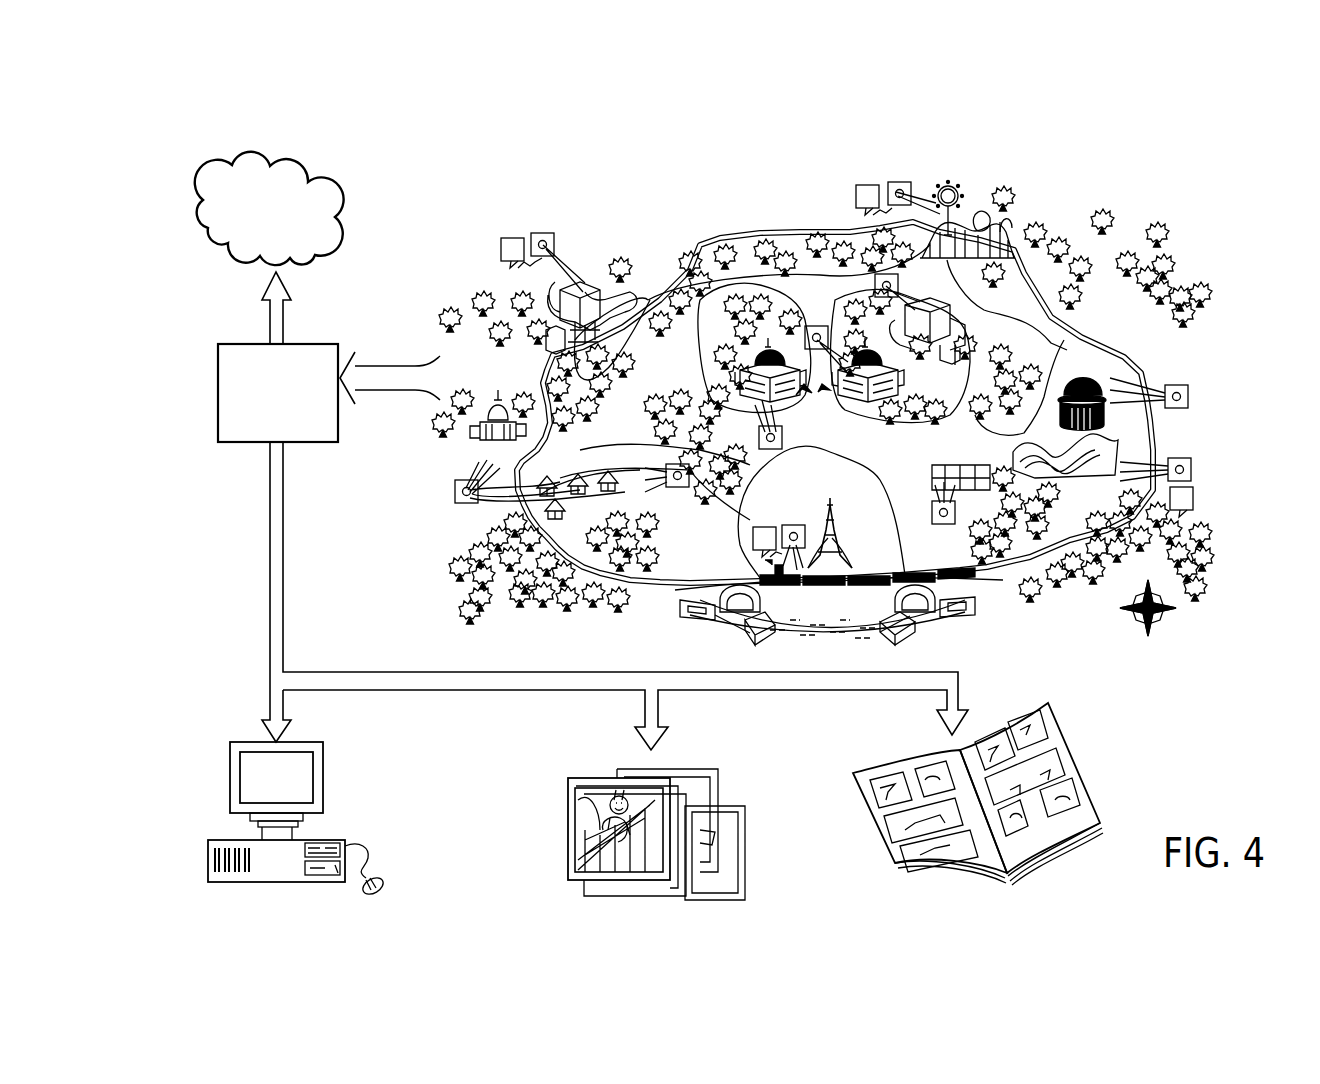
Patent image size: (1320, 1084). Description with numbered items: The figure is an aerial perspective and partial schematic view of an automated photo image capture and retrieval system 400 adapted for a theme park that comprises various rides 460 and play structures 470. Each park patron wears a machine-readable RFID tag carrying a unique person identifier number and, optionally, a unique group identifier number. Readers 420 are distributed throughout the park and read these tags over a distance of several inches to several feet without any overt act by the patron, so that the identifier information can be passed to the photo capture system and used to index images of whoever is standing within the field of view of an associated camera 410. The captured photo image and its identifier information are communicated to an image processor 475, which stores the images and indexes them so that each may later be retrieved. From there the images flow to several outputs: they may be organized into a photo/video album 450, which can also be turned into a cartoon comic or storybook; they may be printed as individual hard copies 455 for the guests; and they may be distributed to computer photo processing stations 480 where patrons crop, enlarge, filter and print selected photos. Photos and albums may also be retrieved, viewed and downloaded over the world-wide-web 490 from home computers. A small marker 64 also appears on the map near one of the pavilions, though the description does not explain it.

The automated photo image capture and retrieval system 400 is at (703, 213).
The camera 410 is at (540, 232).
The reader 420 is at (505, 240).
The photo/video album 450 is at (1073, 752).
The individual hard copies 455 is at (596, 778).
The ride 460 is at (588, 280).
The play structure 470 is at (474, 510).
The image processor 475 is at (306, 344).
The computer photo processing station 480 is at (258, 744).
The world-wide-web 490 is at (265, 162).
The location marker 64 is at (813, 377).